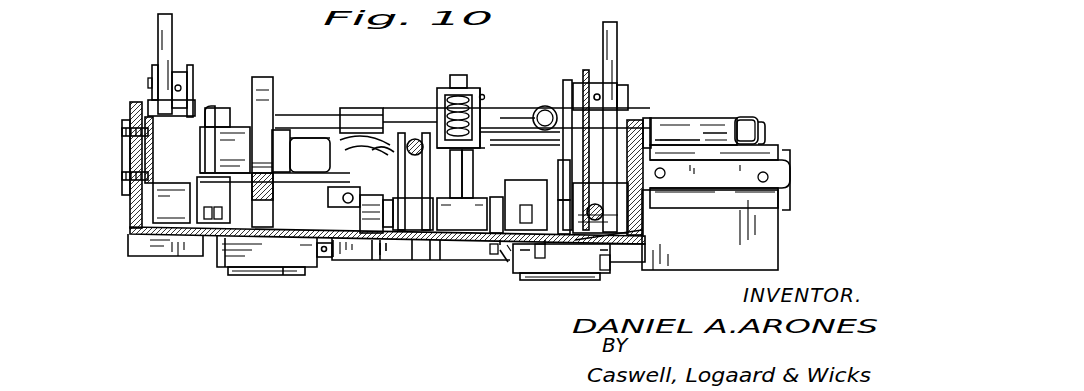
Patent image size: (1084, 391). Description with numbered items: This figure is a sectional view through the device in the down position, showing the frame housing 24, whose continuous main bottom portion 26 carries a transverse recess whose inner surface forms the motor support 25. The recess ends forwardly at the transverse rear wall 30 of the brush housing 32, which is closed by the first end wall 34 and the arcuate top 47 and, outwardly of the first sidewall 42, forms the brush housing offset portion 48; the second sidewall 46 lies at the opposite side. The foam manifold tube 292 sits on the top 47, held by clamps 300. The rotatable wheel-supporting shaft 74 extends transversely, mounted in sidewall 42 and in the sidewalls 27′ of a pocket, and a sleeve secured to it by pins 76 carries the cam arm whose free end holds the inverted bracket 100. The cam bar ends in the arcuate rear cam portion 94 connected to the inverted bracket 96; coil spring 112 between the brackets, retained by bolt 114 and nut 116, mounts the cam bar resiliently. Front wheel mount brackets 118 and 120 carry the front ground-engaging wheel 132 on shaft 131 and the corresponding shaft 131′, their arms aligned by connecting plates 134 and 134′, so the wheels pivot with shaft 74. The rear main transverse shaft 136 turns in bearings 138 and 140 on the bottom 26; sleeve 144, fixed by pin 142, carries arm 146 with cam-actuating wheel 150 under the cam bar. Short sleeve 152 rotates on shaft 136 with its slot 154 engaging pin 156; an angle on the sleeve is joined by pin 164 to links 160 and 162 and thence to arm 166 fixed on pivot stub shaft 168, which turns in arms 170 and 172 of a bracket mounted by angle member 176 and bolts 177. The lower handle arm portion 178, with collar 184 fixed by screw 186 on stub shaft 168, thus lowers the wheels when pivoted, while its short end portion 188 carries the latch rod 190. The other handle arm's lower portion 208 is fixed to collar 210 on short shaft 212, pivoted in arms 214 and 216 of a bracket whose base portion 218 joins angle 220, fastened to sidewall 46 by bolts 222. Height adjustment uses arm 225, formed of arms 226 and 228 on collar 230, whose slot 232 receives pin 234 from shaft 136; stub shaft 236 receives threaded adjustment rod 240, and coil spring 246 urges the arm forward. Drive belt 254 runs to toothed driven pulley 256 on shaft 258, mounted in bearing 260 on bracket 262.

The frame housing 24 is at (126, 232).
The motor support 25 is at (330, 137).
The main bottom portion 26 is at (180, 256).
The sidewalls of pocket 27′ is at (196, 200).
The transverse rear wall 30 is at (420, 260).
The brush housing 32 is at (772, 136).
The first end wall 34 is at (780, 254).
The first sidewall 42 is at (630, 226).
The second sidewall 46 is at (130, 211).
The arcuate top 47 is at (776, 145).
The brush housing offset portion 48 is at (783, 222).
The wheel-supporting shaft 74 is at (330, 205).
The pins 76 is at (352, 194).
The rear cam portion 94 is at (462, 214).
The inverted U-shaped bracket 96 is at (485, 97).
The inverted U-shaped bracket 100 is at (481, 90).
The coil spring 112 is at (441, 92).
The bolt 114 is at (461, 75).
The nut 116 is at (453, 88).
The front wheel mount bracket 118 is at (495, 260).
The front wheel mount bracket 120 is at (225, 267).
The shaft 131 is at (622, 262).
The shaft 131′ is at (334, 258).
The front ground-engaging wheel 132 is at (578, 285).
The connecting plate 134 is at (540, 262).
The connecting plate 134′ is at (283, 275).
The rear main transverse shaft 136 is at (267, 251).
The bearing 138 is at (380, 260).
The bearing 140 is at (506, 264).
The pin 142 is at (490, 188).
The sleeve 144 is at (500, 245).
The arm 146 is at (468, 176).
The cam-actuating wheel 150 is at (533, 121).
The short sleeve 152 is at (545, 245).
The slot 154 is at (612, 287).
The pin 156 is at (564, 257).
The link 160 is at (530, 205).
The link 162 is at (628, 242).
The pin 164 is at (645, 252).
The arm 166 is at (567, 80).
The pivot stub shaft 168 is at (628, 90).
The bracket arm 170 is at (586, 70).
The bracket arm 172 is at (617, 90).
The angle member 176 is at (708, 118).
The bolts 177 is at (714, 168).
The lower handle arm portion 178 is at (617, 30).
The collar 184 is at (600, 84).
The screw 186 is at (635, 118).
The short end portion 188 is at (651, 122).
The latch rod 190 is at (604, 212).
The lower portion of second handle arm 208 is at (174, 30).
The collar 210 is at (181, 72).
The short shaft 212 is at (194, 74).
The bracket arm 214 is at (152, 67).
The bracket arm 216 is at (197, 102).
The bracket base portion 218 is at (147, 83).
The angle 220 is at (122, 158).
The bolts 222 is at (122, 132).
The arm 225 is at (426, 131).
The arm 226 is at (366, 133).
The arm 228 is at (440, 260).
The collar 230 is at (430, 260).
The slot 232 is at (412, 260).
The pin 234 is at (372, 260).
The stub shaft 236 is at (355, 122).
The threaded adjustment rod 240 is at (414, 214).
The coil spring 246 is at (400, 133).
The drive belt 254 is at (275, 80).
The toothed driven pulley 256 is at (298, 275).
The shaft 258 is at (273, 186).
The bearing 260 is at (245, 113).
The bracket 262 is at (212, 220).
The foam manifold tube 292 is at (522, 108).
The clamps 300 is at (236, 106).